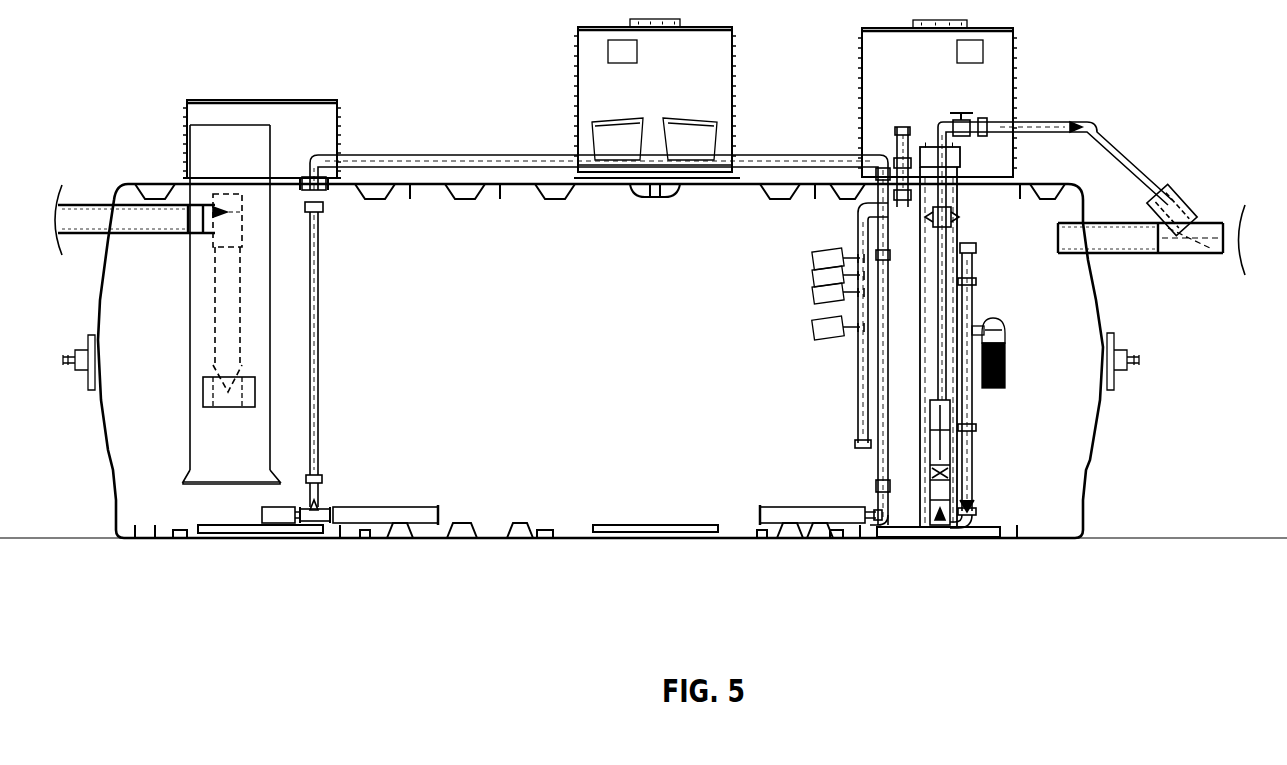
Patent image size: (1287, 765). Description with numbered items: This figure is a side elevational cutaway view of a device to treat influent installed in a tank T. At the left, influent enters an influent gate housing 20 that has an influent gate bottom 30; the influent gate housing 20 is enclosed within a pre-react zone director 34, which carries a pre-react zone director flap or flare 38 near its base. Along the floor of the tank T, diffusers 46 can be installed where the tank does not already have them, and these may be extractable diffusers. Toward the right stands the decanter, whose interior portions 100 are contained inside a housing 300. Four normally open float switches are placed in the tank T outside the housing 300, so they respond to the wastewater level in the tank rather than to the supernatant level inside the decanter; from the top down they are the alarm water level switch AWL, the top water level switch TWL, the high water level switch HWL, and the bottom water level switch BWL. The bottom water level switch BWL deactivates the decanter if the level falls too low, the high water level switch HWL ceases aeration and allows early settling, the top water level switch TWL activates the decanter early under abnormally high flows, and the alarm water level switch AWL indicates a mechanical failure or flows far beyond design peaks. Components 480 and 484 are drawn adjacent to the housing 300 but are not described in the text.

The influent gate housing 20 is at (232, 320).
The influent gate bottom 30 is at (218, 407).
The pre-react zone director 34 is at (270, 363).
The pre-react zone director flap or flare 38 is at (270, 475).
The diffusers 46 is at (262, 515).
The interior portions 100 is at (947, 245).
The housing 300 is at (920, 343).
The filter housing 480 is at (1006, 366).
The filter element 484 is at (1000, 386).
The tank T is at (584, 293).
The alarm water level switch AWL is at (813, 255).
The top water level switch TWL is at (813, 273).
The high water level switch HWL is at (813, 292).
The bottom water level switch BWL is at (813, 327).